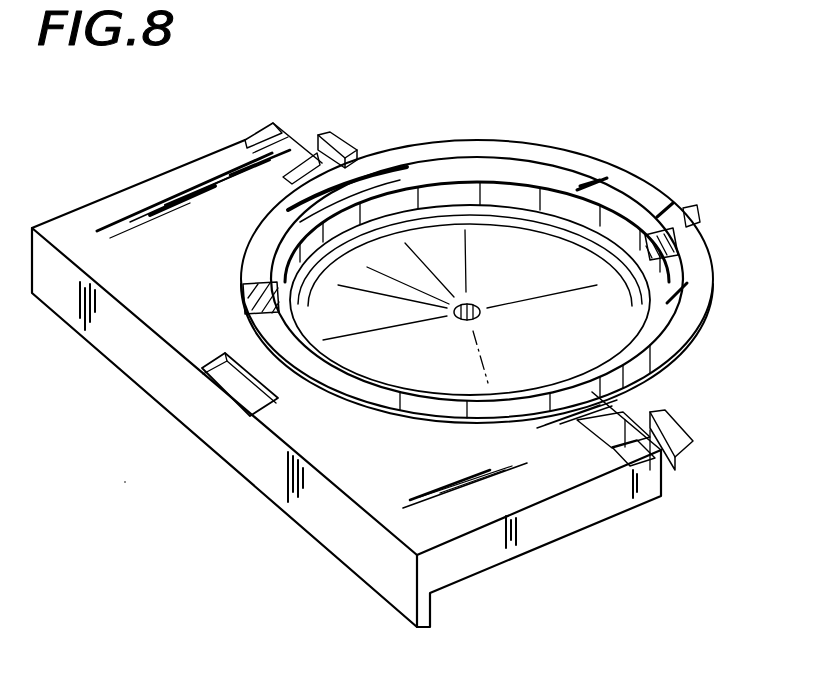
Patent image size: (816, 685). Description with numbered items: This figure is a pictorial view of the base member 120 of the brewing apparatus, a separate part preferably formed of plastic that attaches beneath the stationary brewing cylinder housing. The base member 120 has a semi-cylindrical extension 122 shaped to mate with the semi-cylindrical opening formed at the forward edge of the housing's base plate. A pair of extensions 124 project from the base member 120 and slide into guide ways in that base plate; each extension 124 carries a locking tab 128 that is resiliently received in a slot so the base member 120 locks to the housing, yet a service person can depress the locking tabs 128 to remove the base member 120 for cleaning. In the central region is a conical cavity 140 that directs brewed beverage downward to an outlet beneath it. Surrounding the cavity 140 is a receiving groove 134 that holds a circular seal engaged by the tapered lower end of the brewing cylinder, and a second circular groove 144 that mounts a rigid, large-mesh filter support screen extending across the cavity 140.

The base member 120 is at (340, 528).
The semi-cylindrical extension 122 is at (568, 152).
The extensions 124 is at (288, 148).
The locking tabs 128 is at (342, 143).
The receiving groove 134 is at (673, 270).
The conical cavity 140 is at (497, 245).
The second circular groove 144 is at (287, 300).